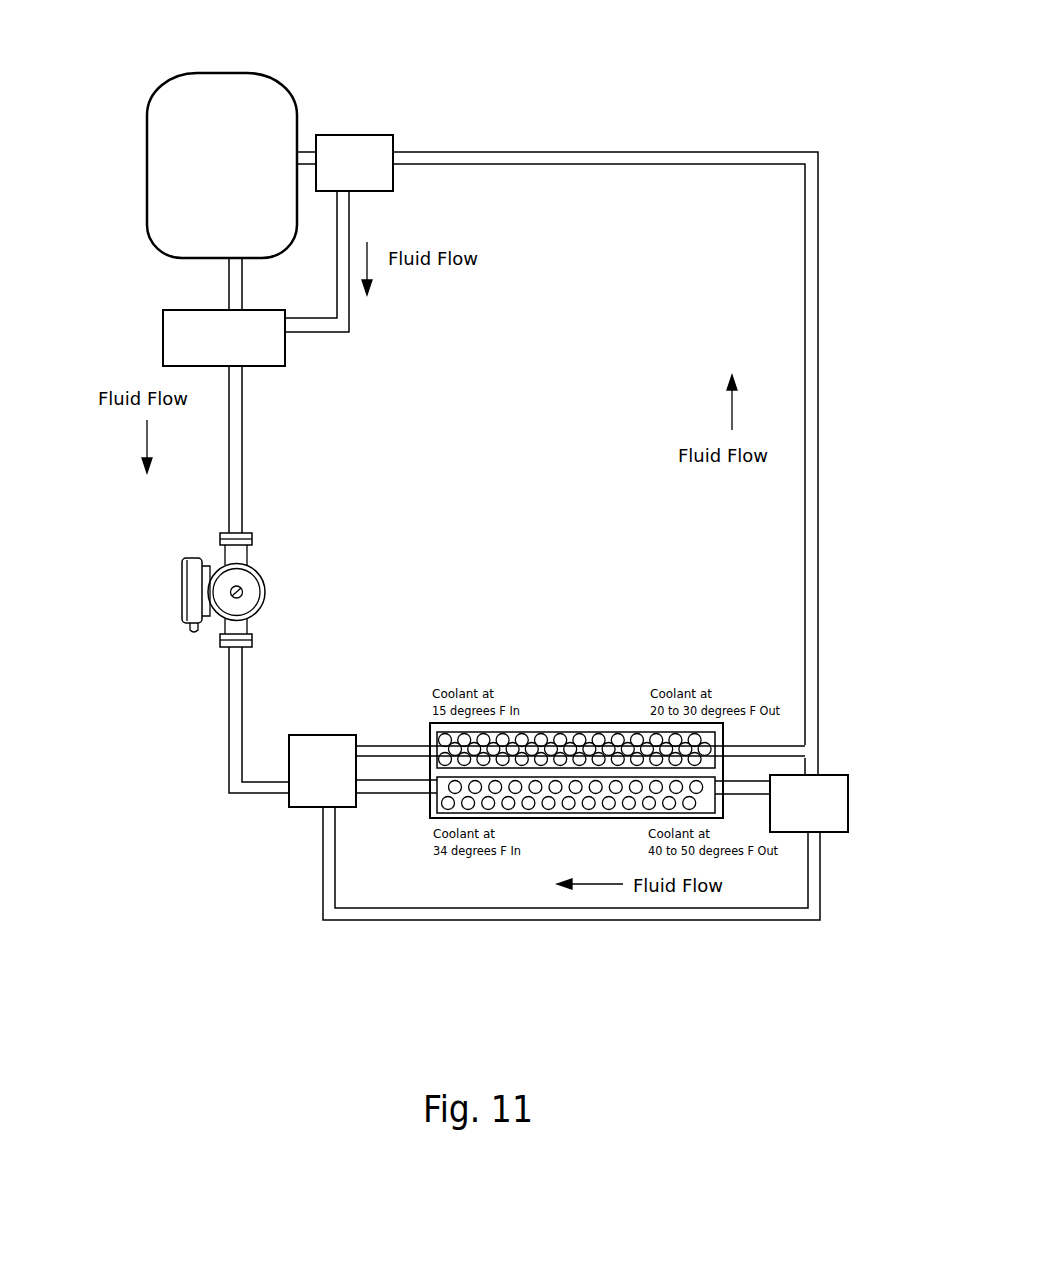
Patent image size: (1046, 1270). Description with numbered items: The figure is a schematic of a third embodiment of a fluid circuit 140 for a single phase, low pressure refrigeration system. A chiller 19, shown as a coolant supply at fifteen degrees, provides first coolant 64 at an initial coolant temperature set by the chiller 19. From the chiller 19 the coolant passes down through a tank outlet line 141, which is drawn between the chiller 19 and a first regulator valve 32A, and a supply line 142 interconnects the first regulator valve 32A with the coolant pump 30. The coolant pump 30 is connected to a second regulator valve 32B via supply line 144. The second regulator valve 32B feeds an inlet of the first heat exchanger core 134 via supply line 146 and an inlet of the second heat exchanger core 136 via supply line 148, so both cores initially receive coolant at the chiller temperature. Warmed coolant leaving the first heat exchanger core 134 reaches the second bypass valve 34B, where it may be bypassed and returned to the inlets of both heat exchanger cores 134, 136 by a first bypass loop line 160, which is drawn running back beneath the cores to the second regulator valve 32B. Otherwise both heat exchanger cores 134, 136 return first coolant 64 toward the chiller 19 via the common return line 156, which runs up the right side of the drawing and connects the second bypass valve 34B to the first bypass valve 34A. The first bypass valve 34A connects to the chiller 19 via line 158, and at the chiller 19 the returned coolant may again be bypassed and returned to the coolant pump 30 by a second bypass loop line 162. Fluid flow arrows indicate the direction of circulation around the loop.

The chiller 19 is at (243, 77).
The line 158 is at (303, 152).
The first bypass valve 34A is at (393, 135).
The common return line 156 is at (819, 262).
The first coolant 64 is at (805, 560).
The fluid circuit 140 is at (595, 130).
The second bypass loop line 162 is at (350, 307).
The tank outlet pipe 141 is at (228, 281).
The first regulator valve 32A is at (260, 366).
The supply line 142 is at (242, 468).
The coolant pump 30 is at (265, 580).
The supply line 144 is at (228, 736).
The second regulator valve 32B is at (290, 807).
The supply line 148 is at (405, 746).
The supply line 146 is at (387, 792).
The second heat exchanger core 136 is at (577, 723).
The first heat exchanger core 134 is at (585, 818).
The second bypass valve 34B is at (828, 775).
The first bypass loop line 160 is at (705, 932).